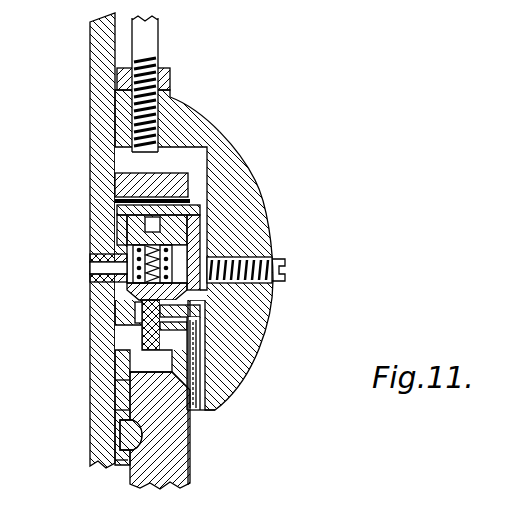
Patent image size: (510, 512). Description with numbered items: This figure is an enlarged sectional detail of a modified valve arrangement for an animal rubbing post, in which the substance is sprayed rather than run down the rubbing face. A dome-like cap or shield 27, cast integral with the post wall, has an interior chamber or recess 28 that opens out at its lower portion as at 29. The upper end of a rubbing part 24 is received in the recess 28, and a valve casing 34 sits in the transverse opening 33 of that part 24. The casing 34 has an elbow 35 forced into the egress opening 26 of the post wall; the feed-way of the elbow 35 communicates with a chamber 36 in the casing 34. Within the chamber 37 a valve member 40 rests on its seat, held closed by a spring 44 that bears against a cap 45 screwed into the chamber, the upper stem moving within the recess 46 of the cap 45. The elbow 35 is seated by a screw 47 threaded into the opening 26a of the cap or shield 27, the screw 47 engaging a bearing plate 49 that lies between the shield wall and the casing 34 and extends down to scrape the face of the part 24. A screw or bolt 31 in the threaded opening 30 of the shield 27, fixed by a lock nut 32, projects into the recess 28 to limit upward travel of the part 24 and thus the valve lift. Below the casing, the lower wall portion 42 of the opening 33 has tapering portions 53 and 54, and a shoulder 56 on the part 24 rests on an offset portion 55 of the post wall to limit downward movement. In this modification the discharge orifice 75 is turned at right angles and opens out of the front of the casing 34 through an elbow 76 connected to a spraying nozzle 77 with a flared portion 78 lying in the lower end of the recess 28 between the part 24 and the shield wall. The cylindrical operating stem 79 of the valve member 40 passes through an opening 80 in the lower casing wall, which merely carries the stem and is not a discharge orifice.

The rubbing part 24 is at (180, 471).
The egress opening 26 is at (122, 288).
The threaded opening 26a is at (247, 253).
The cap or shield 27 is at (178, 200).
The chamber or recess 28 is at (177, 157).
The opening of cap or shield 29 is at (193, 412).
The threaded opening 30 is at (160, 113).
The screw or bolt 31 is at (150, 38).
The lock nut 32 is at (170, 82).
The transverse opening 33 is at (130, 360).
The valve casing 34 is at (150, 322).
The elbow 35 is at (115, 260).
The chamber 36 is at (92, 270).
The chamber 37 is at (173, 250).
The valve member 40 is at (145, 297).
The lower wall portion 42 is at (128, 394).
The spring 44 is at (128, 250).
The cap 45 is at (125, 196).
The recess 46 is at (188, 214).
The screw 47 is at (287, 266).
The bearing plate 49 is at (200, 228).
The tapering portion 53 is at (125, 373).
The tapering portion 54 is at (122, 408).
The offset portion 55 is at (125, 433).
The shoulder 56 is at (125, 463).
The discharge orifice 75 is at (205, 312).
The elbow 76 is at (203, 325).
The spraying nozzle 77 is at (205, 365).
The flared portion 78 is at (203, 412).
The operating stem 79 is at (200, 331).
The opening 80 is at (125, 340).